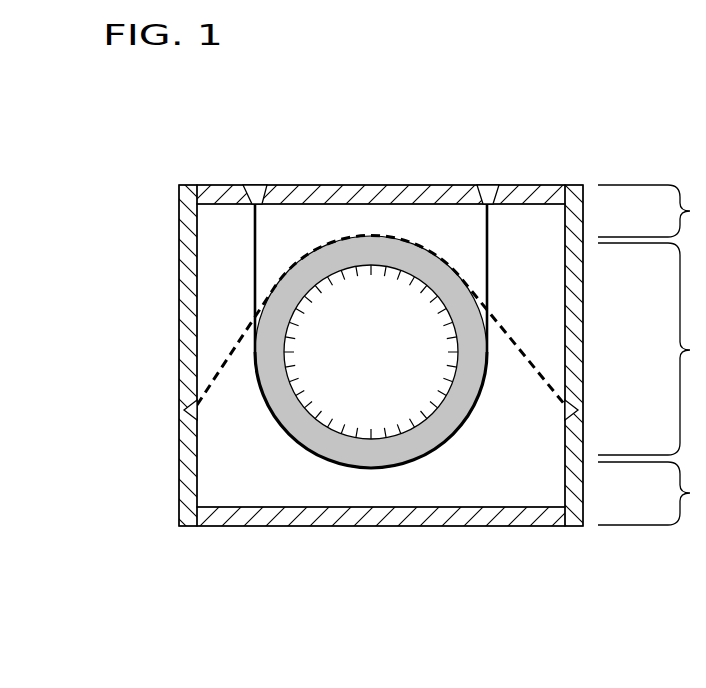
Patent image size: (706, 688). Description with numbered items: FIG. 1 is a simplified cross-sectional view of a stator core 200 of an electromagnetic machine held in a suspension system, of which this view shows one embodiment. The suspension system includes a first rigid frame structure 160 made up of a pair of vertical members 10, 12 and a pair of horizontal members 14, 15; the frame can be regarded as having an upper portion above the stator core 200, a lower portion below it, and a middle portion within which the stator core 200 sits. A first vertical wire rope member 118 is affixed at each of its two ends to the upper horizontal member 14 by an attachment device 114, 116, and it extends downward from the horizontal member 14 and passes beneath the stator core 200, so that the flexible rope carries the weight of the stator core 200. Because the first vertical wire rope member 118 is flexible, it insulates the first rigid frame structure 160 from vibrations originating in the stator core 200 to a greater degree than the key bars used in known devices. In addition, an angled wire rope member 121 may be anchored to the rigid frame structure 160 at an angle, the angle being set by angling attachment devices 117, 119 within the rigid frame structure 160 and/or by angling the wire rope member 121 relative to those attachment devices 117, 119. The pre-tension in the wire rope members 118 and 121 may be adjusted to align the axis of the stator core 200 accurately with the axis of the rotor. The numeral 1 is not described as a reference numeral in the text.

The inspection apparatus 1 is at (536, 159).
The vertical member 10 is at (187, 315).
The vertical member 12 is at (585, 390).
The horizontal member 14 is at (362, 185).
The horizontal member 15 is at (308, 526).
The attachment device 114 is at (255, 186).
The attachment device 116 is at (485, 186).
The attachment device 117 is at (182, 420).
The first vertical wire rope member 118 is at (488, 278).
The attachment device 119 is at (577, 417).
The angled wire rope member 121 is at (528, 360).
The first rigid frame structure 160 is at (592, 168).
The stator core 200 is at (388, 359).